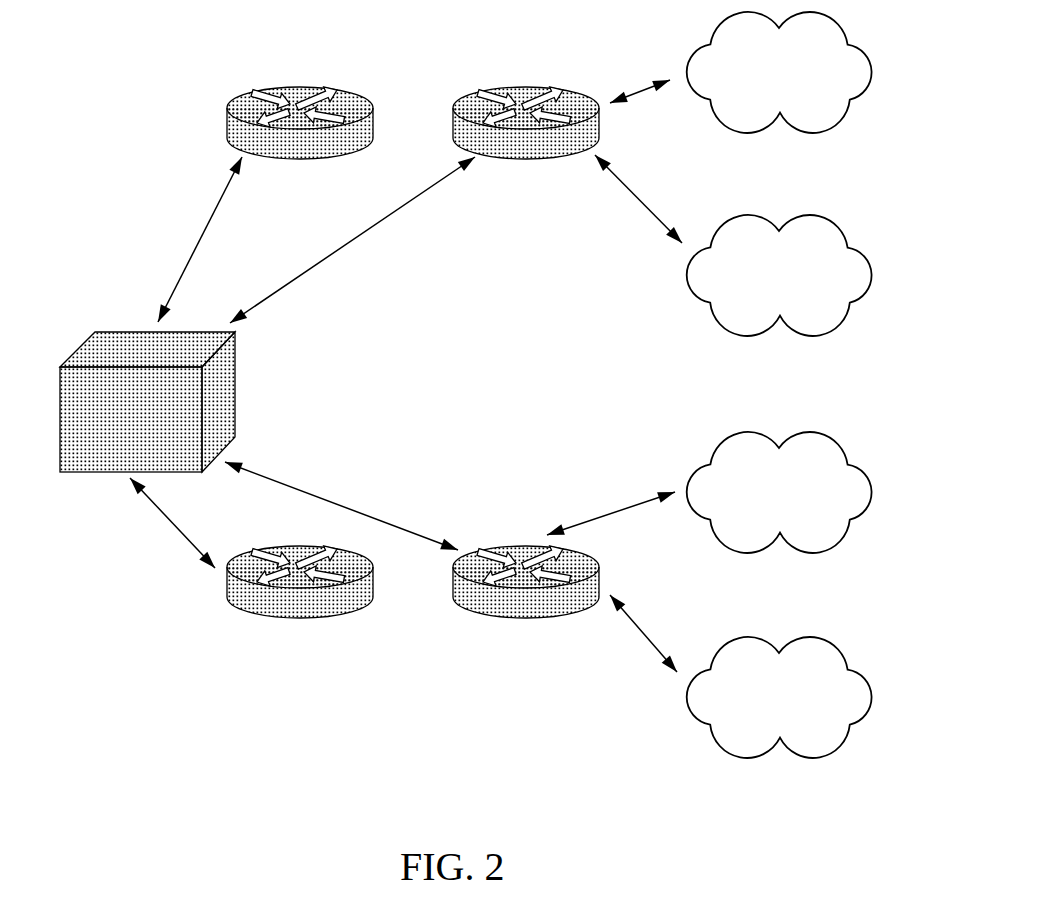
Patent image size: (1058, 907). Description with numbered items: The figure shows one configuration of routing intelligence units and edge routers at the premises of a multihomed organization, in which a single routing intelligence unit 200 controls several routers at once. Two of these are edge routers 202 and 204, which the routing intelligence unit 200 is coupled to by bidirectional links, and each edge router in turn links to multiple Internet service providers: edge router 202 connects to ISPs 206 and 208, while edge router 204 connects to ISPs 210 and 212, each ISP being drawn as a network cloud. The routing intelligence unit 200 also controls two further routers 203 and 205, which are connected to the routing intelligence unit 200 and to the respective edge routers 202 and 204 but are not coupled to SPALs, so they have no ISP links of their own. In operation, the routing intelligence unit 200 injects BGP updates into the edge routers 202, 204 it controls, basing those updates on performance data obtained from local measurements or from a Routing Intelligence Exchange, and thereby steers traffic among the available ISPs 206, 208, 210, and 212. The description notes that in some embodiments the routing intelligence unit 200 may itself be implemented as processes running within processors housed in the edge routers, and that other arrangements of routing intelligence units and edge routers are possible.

The routing intelligence unit 200 is at (177, 402).
The edge router 202 is at (526, 108).
The router 203 is at (300, 108).
The edge router 204 is at (526, 599).
The router 205 is at (300, 599).
The ISP 206 is at (807, 72).
The ISP 208 is at (807, 275).
The ISP 210 is at (807, 492).
The ISP 212 is at (807, 697).